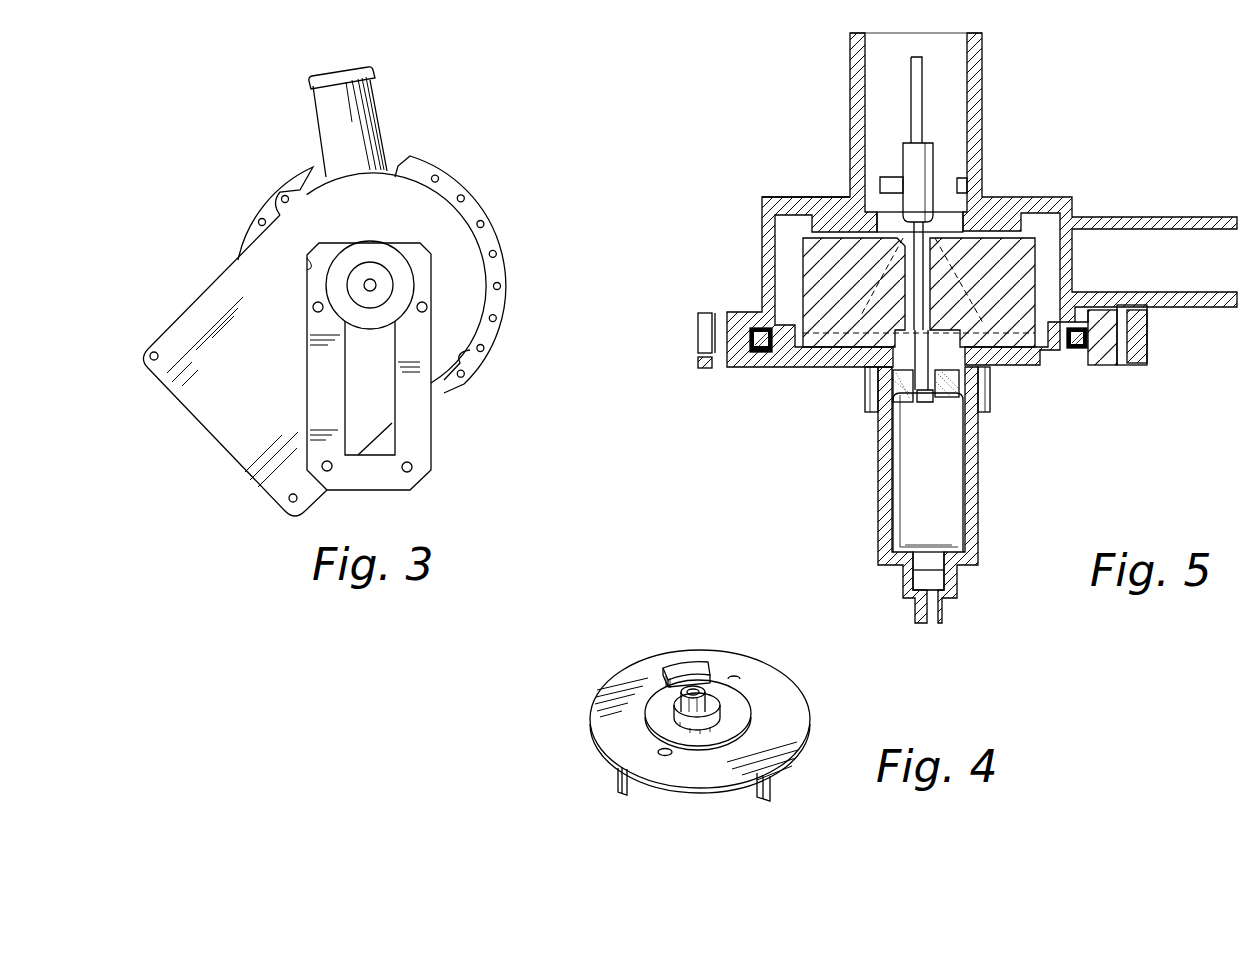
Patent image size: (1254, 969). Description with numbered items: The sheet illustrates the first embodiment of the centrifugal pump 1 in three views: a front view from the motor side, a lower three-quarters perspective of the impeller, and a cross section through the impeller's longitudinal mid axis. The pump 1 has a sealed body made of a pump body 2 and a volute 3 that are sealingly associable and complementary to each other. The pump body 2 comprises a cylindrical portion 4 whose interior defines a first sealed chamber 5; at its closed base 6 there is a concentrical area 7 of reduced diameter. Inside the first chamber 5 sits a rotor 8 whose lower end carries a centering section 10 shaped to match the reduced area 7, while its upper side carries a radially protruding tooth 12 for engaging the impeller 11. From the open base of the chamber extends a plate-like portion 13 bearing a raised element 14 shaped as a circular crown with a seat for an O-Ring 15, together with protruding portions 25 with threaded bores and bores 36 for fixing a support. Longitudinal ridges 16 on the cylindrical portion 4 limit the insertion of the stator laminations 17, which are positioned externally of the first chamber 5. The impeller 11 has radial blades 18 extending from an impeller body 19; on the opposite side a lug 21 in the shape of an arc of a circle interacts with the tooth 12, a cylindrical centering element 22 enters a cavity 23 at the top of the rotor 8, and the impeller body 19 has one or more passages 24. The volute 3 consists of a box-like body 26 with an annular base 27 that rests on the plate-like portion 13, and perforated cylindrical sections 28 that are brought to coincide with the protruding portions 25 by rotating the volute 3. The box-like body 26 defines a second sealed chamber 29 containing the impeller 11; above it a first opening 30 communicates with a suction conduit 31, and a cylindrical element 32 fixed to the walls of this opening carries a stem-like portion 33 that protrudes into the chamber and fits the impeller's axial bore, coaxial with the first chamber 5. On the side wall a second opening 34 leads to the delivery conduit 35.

In FIG. 3, the centrifugal pump 1 is at (193, 456).
In FIG. 5, the centrifugal pump 1 is at (1116, 100).
In FIG. 5, the pump body 2 is at (1068, 500).
In FIG. 5, the volute 3 is at (740, 250).
In FIG. 5, the cylindrical portion 4 is at (986, 555).
In FIG. 5, the first sealed chamber 5 is at (965, 490).
In FIG. 5, the closed base 6 is at (906, 613).
In FIG. 5, the concentrical area 7 is at (906, 578).
In FIG. 5, the rotor 8 is at (915, 503).
In FIG. 5, the centering section 10 is at (956, 583).
In FIG. 5, the impeller 11 is at (797, 238).
In FIG. 4, the impeller 11 is at (620, 662).
In FIG. 5, the radially protruding tooth 12 is at (979, 456).
In FIG. 5, the plate-like portion 13 is at (776, 370).
In FIG. 5, the raised element 14 is at (1080, 350).
In FIG. 5, the O-Ring 15 is at (731, 368).
In FIG. 5, the longitudinal ridges 16 is at (997, 380).
In FIG. 3, the stator laminations 17 is at (418, 456).
In FIG. 5, the radial blades 18 is at (1030, 285).
In FIG. 4, the radial blades 18 is at (775, 780).
In FIG. 5, the impeller body 19 is at (808, 358).
In FIG. 4, the impeller body 19 is at (795, 722).
In FIG. 5, the lug 21 is at (990, 386).
In FIG. 4, the lug 21 is at (682, 662).
In FIG. 5, the cylindrical centering element 22 is at (897, 400).
In FIG. 4, the cylindrical centering element 22 is at (705, 688).
In FIG. 5, the cavity 23 is at (900, 460).
In FIG. 4, the passages 24 is at (650, 753).
In FIG. 3, the protruding portions 25 is at (455, 386).
In FIG. 5, the box-like body 26 is at (770, 196).
In FIG. 3, the annular base 27 is at (494, 334).
In FIG. 5, the perforated cylindrical sections 28 is at (1147, 334).
In FIG. 5, the second sealed chamber 29 is at (1040, 220).
In FIG. 5, the first opening 30 is at (950, 200).
In FIG. 5, the suction conduit 31 is at (984, 60).
In FIG. 5, the cylindrical element 32 is at (946, 145).
In FIG. 5, the stem-like portion 33 is at (910, 378).
In FIG. 5, the second opening 34 is at (1106, 224).
In FIG. 3, the delivery conduit 35 is at (332, 120).
In FIG. 5, the delivery conduit 35 is at (1162, 216).
In FIG. 3, the bores 36 is at (158, 351).